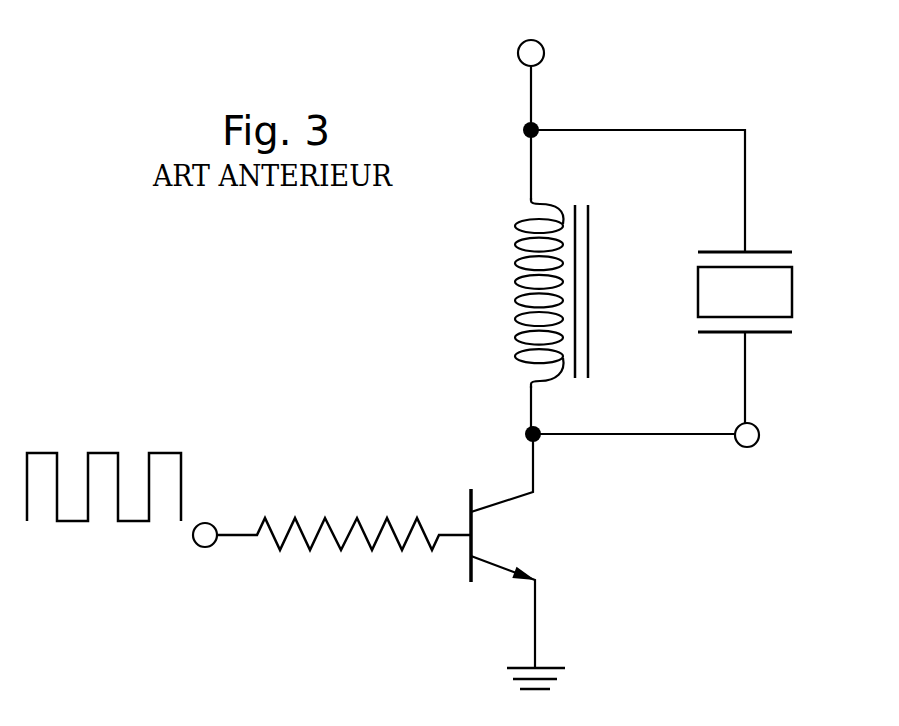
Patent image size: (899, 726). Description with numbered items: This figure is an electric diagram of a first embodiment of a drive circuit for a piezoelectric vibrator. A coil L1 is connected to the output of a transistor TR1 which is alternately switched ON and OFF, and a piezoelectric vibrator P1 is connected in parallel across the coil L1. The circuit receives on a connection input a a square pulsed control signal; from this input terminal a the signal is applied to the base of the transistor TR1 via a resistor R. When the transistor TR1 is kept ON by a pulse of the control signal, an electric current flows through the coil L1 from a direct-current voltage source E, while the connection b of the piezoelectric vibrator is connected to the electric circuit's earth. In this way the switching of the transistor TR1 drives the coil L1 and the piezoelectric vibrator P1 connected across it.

The direct-current voltage source E is at (532, 65).
The coil L1 is at (515, 282).
The piezoelectric vibrator P1 is at (762, 249).
The connection b is at (759, 437).
The connection input a is at (205, 522).
The resistor R is at (357, 518).
The transistor TR1 is at (472, 567).